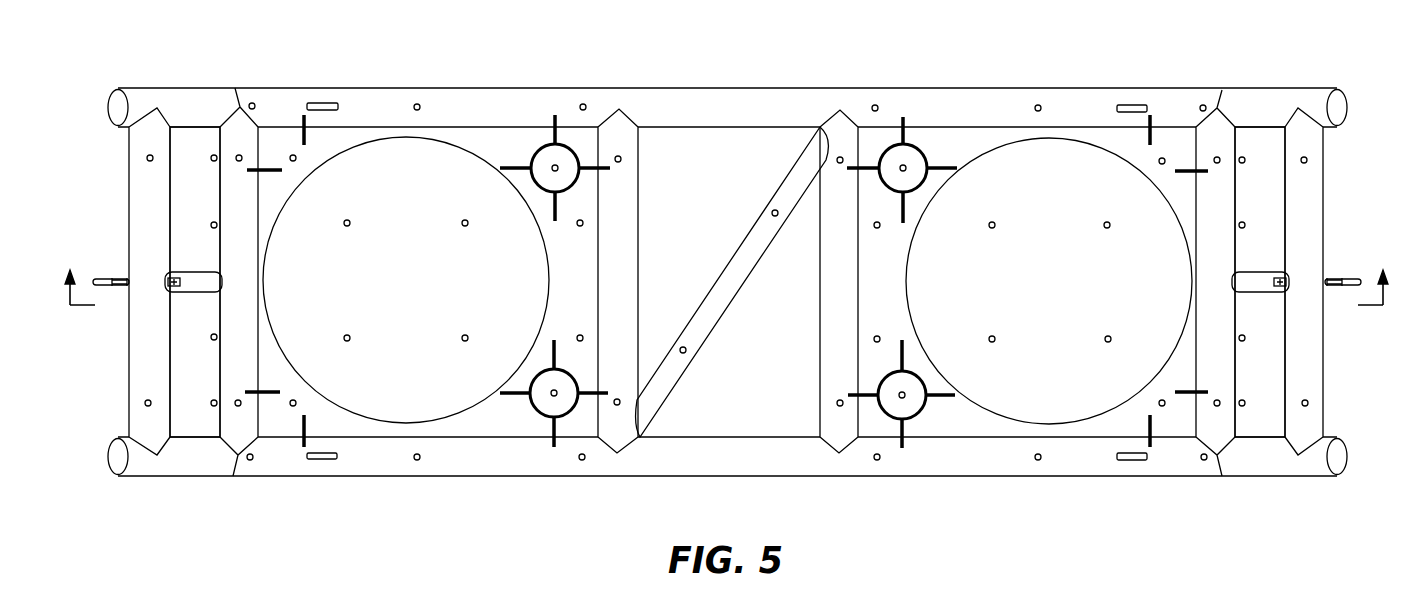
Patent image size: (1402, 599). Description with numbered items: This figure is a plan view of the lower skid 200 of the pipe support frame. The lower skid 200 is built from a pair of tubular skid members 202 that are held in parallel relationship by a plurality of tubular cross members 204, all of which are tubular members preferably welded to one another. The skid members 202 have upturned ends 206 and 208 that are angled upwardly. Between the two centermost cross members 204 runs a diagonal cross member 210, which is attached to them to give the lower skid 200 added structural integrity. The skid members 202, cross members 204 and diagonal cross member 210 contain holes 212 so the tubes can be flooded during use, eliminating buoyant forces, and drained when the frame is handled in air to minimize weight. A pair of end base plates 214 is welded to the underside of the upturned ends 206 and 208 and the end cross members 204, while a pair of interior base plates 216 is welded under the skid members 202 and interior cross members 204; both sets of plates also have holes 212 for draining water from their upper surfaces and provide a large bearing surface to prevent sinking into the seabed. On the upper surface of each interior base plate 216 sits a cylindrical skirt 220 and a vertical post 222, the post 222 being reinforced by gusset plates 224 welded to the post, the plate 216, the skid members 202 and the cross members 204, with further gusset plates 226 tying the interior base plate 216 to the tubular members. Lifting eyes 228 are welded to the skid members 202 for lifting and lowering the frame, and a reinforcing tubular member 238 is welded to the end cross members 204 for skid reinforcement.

The lower skid 200 is at (740, 88).
The tubular skid members 202 is at (467, 87).
The tubular cross members 204 is at (131, 164).
The upturned end 206 is at (163, 88).
The upturned end 208 is at (1305, 88).
The diagonal cross member 210 is at (753, 230).
The holes 212 is at (622, 158).
The end base plates 214 is at (190, 380).
The interior base plates 216 is at (1070, 294).
The cylindrical skirts 220 is at (365, 145).
The vertical posts 222 is at (570, 147).
The gusset plates 224 is at (547, 145).
The gusset plates 226 is at (302, 133).
The lifting eyes 228 is at (315, 460).
The reinforcing tubular member 238 is at (190, 290).